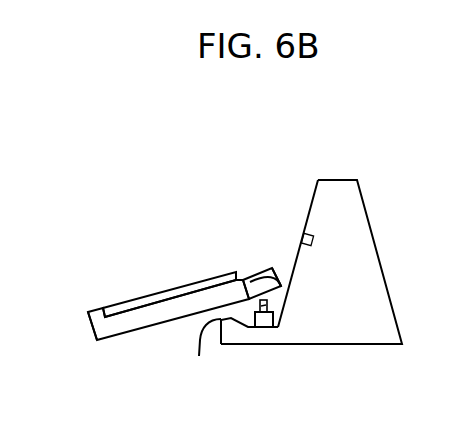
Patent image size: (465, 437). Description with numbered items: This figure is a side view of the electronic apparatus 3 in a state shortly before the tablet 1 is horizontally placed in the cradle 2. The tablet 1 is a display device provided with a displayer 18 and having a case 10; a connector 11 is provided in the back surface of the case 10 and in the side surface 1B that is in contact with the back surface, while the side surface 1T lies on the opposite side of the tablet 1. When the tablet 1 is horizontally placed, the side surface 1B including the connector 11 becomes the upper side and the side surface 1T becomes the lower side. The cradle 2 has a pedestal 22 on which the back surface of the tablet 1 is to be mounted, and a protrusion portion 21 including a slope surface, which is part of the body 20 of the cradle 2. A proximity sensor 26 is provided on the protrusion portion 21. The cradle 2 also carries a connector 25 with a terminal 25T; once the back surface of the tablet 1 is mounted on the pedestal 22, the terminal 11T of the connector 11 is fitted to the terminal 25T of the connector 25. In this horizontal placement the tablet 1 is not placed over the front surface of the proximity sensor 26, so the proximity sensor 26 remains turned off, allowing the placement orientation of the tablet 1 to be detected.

The electronic apparatus 3 is at (199, 146).
The tablet 1 is at (137, 349).
The side surface 1T is at (91, 326).
The side surface 1B is at (304, 233).
The case 10 is at (168, 310).
The displayer 18 is at (197, 284).
The connector 11 is at (256, 274).
The terminal 11T is at (279, 288).
The cradle 2 is at (382, 242).
The support body 20 is at (352, 231).
The protrusion portion 21 is at (311, 206).
The pedestal 22 is at (218, 319).
The connector 25 is at (274, 316).
The terminal 25T is at (267, 301).
The proximity sensor 26 is at (313, 235).